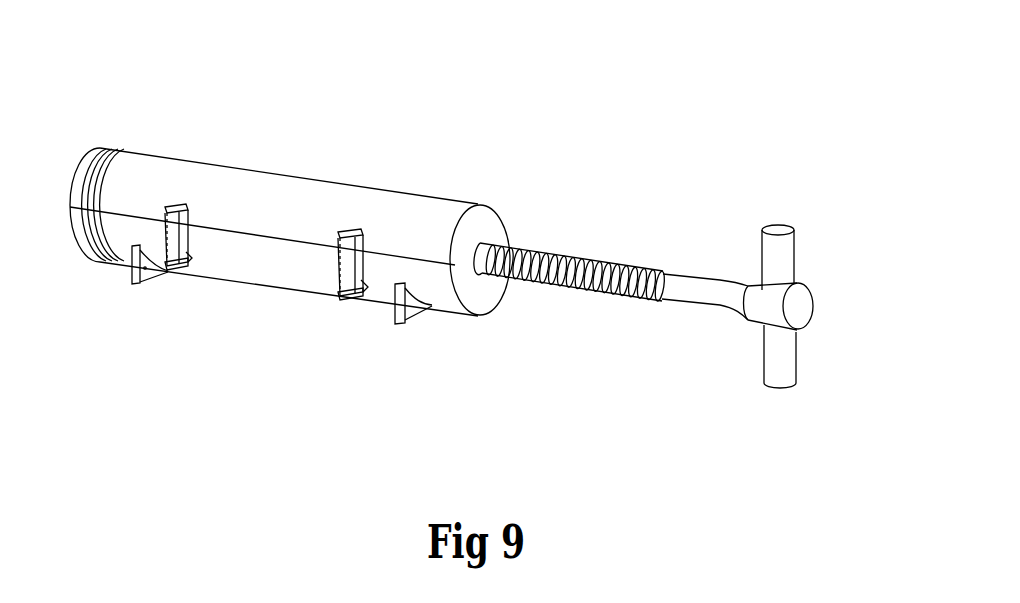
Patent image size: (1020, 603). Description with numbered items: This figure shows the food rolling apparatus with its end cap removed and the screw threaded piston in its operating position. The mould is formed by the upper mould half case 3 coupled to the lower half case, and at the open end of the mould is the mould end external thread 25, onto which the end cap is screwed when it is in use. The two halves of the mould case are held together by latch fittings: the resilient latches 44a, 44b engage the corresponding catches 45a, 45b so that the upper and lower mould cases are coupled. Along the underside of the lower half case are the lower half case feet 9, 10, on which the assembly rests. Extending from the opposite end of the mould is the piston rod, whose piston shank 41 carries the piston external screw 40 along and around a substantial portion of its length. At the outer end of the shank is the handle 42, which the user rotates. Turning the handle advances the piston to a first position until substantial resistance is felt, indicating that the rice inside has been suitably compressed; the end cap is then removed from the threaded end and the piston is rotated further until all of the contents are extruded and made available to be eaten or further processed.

The upper mould half case 3 is at (283, 183).
The mould end external thread 25 is at (108, 148).
The resilient latch 44a is at (358, 228).
The resilient latch 44b is at (183, 200).
The catch 45a is at (358, 270).
The catch 45b is at (188, 257).
The lower half case foot 10 is at (147, 283).
The lower half case foot 9 is at (410, 312).
The piston external screw 40 is at (550, 250).
The piston shank 41 is at (693, 275).
The handle 42 is at (803, 257).